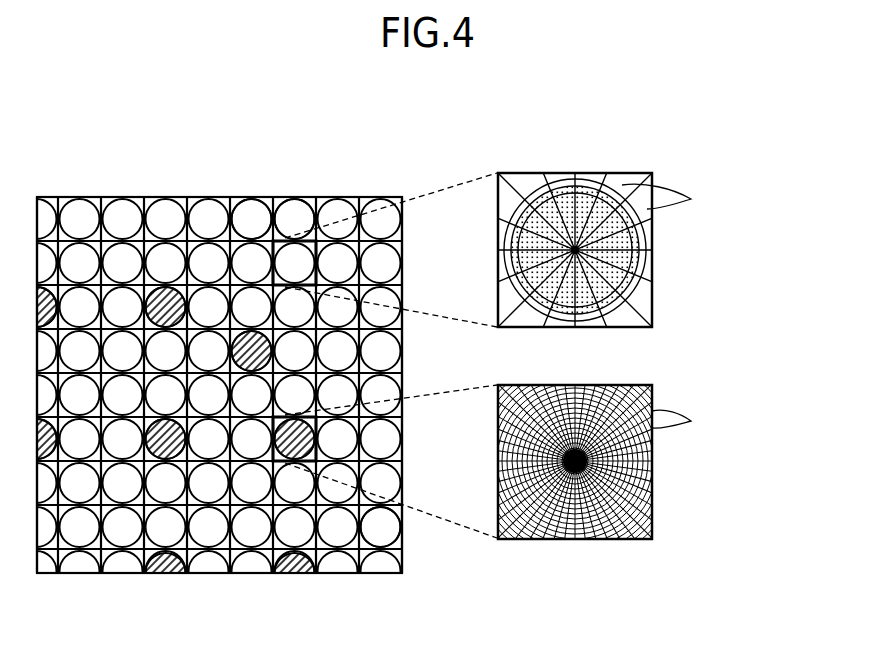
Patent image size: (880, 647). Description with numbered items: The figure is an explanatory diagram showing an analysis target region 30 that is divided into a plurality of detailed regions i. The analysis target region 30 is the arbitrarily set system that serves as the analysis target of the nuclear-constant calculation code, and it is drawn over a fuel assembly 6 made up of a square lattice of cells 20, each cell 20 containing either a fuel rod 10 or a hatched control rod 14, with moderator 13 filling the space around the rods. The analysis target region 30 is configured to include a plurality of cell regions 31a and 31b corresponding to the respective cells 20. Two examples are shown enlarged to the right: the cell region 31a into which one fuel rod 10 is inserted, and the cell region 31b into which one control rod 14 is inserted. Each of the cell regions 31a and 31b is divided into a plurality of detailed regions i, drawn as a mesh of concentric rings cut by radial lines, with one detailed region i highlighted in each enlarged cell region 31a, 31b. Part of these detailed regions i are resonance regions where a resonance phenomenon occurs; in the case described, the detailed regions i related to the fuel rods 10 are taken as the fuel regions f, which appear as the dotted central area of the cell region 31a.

The fuel assembly 6 is at (371, 133).
The fuel rod 10 is at (294, 212).
The analysis target region 30 is at (400, 191).
The cell 20 is at (403, 343).
The control rod 14 is at (166, 440).
The moderator 13 is at (397, 512).
The cell region 31a is at (652, 290).
The cell region 31b is at (652, 518).
The fuel region f is at (592, 193).
The detailed region i is at (702, 324).